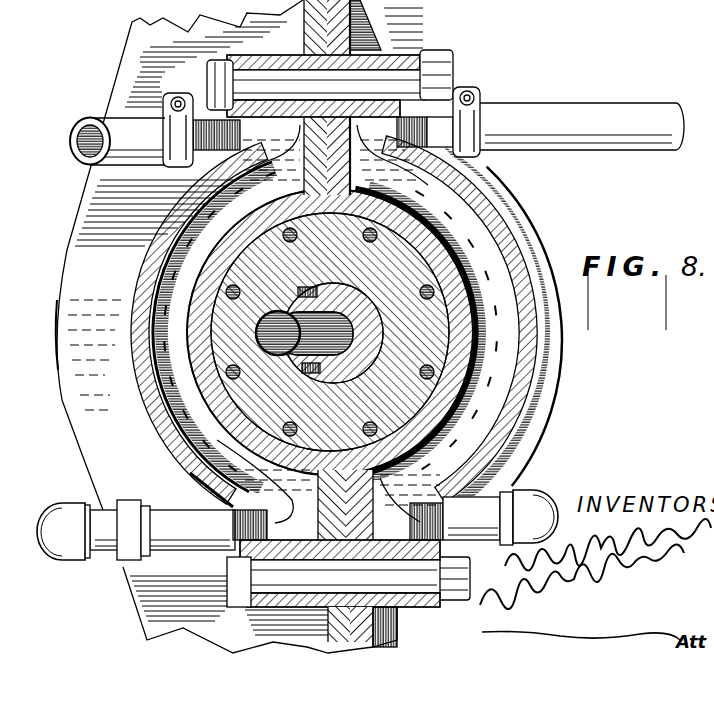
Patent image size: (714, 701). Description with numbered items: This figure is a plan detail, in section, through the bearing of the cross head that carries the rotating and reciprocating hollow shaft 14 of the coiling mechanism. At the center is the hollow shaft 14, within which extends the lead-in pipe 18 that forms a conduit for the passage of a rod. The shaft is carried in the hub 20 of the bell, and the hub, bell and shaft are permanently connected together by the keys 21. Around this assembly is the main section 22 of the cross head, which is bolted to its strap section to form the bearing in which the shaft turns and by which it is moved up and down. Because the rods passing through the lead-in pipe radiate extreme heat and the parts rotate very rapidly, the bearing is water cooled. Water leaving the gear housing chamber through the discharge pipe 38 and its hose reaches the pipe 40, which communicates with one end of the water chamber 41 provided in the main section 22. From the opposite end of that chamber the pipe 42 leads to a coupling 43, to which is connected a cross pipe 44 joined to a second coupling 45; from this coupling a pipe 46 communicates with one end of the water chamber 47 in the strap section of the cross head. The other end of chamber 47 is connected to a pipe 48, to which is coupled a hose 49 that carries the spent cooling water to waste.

The hollow shaft 14 is at (355, 332).
The lead-in pipe 18 is at (265, 340).
The hub 20 is at (460, 291).
The keys 21 is at (307, 279).
The main section 22 is at (58, 290).
The discharge pipe 38 is at (72, 136).
The pipe 40 is at (203, 133).
The water chamber 41 is at (152, 367).
The pipe 42 is at (214, 537).
The coupling 43 is at (50, 557).
The cross pipe 44 is at (164, 523).
The coupling 45 is at (530, 503).
The pipe 46 is at (458, 545).
The water chamber 47 is at (490, 413).
The pipe 48 is at (455, 108).
The hose 49 is at (542, 112).